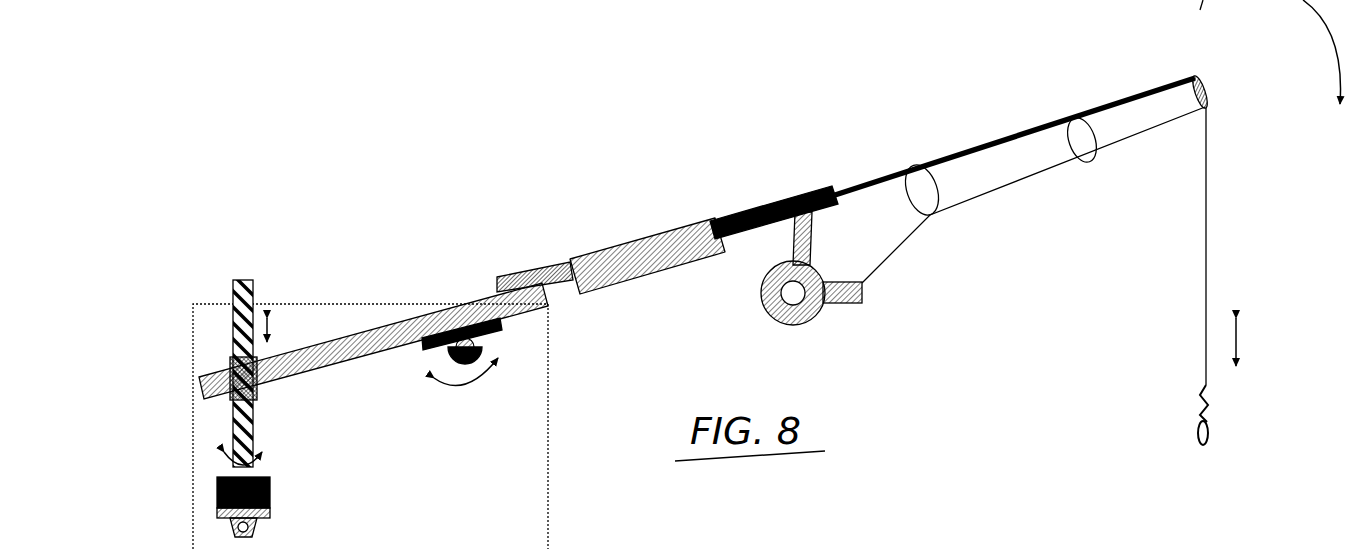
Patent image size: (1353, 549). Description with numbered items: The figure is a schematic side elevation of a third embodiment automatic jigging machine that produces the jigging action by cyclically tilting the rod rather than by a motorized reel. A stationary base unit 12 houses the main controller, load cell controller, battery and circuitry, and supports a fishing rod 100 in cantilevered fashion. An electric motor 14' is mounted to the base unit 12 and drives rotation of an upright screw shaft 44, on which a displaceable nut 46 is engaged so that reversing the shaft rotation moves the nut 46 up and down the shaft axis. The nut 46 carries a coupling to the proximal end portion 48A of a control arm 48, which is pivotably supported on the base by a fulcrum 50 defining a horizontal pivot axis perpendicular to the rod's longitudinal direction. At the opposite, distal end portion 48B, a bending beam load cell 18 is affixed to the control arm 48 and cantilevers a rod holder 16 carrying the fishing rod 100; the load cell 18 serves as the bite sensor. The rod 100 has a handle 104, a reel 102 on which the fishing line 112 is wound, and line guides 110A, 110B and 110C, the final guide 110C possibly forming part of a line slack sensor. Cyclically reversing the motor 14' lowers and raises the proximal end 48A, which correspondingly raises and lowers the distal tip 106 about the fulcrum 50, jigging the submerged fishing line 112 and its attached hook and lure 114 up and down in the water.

The stationary base unit 12 is at (185, 13).
The electric motor 14' is at (288, 494).
The rod holder 16 is at (637, 250).
The bending beam load cell 18 is at (545, 262).
The screw shaft 44 is at (247, 437).
The displaceable nut 46 is at (230, 370).
The control arm 48 is at (355, 332).
The proximal end portion of control arm 48A is at (213, 387).
The distal end portion of control arm 48B is at (530, 299).
The fulcrum 50 is at (447, 355).
The fishing rod 100 is at (986, 136).
The reel 102 is at (775, 302).
The handle 104 is at (762, 204).
The distal tip of fishing rod 106 is at (1212, 74).
The line guide 110A is at (910, 190).
The line guide 110B is at (1087, 163).
The final line guide 110C is at (1210, 100).
The fishing line 112 is at (1210, 222).
The hook and lure 114 is at (1218, 411).